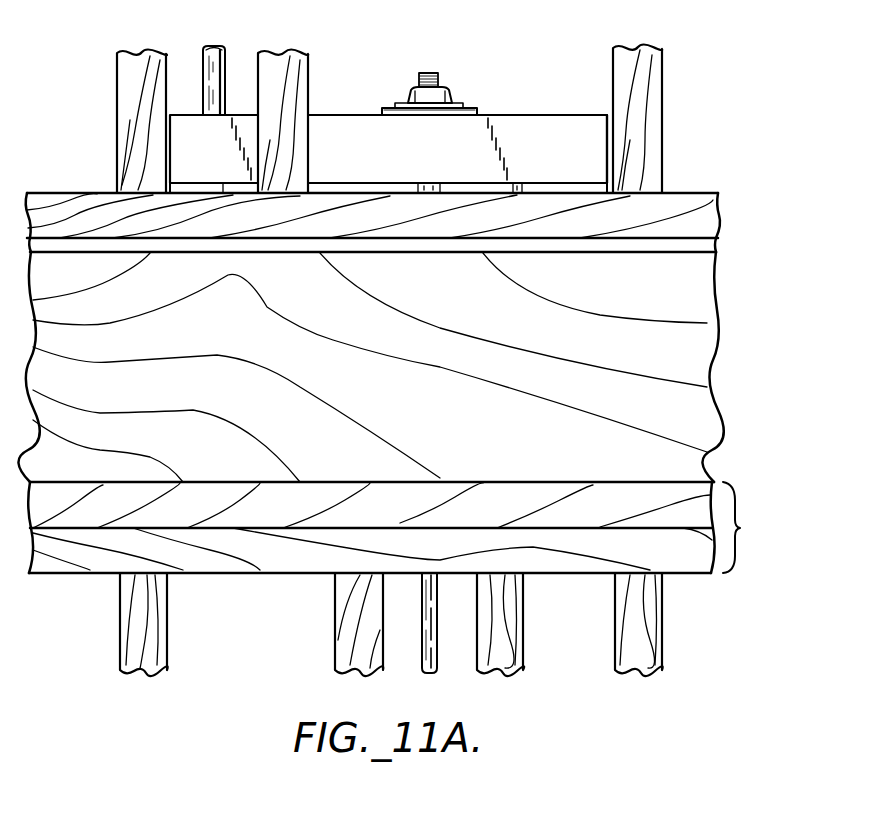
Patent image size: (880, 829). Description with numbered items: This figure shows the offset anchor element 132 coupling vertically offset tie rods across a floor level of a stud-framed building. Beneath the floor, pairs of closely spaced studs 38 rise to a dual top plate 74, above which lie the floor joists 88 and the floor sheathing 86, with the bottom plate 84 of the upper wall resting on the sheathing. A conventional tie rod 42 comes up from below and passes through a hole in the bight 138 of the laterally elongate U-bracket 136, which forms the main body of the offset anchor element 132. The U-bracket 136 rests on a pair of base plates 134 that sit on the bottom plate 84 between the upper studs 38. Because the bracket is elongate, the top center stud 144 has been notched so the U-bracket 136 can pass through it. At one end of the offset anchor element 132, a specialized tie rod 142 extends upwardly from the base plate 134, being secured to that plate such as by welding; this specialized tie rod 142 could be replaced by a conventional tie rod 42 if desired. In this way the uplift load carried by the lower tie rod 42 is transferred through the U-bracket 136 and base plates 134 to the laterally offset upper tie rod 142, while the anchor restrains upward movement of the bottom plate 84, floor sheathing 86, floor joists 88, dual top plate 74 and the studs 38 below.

The studs 38 is at (130, 88).
The tie rod 42 is at (437, 655).
The dual top plate 74 is at (400, 527).
The bottom plate 84 is at (708, 212).
The layer 86 is at (712, 245).
The floor joists 88 is at (712, 290).
The offset anchor element 132 is at (327, 110).
The base plate 134 is at (588, 182).
The U-bracket 136 is at (543, 123).
The bight 138 is at (477, 112).
The specialized tie rod 142 is at (205, 60).
The top center stud 144 is at (296, 52).